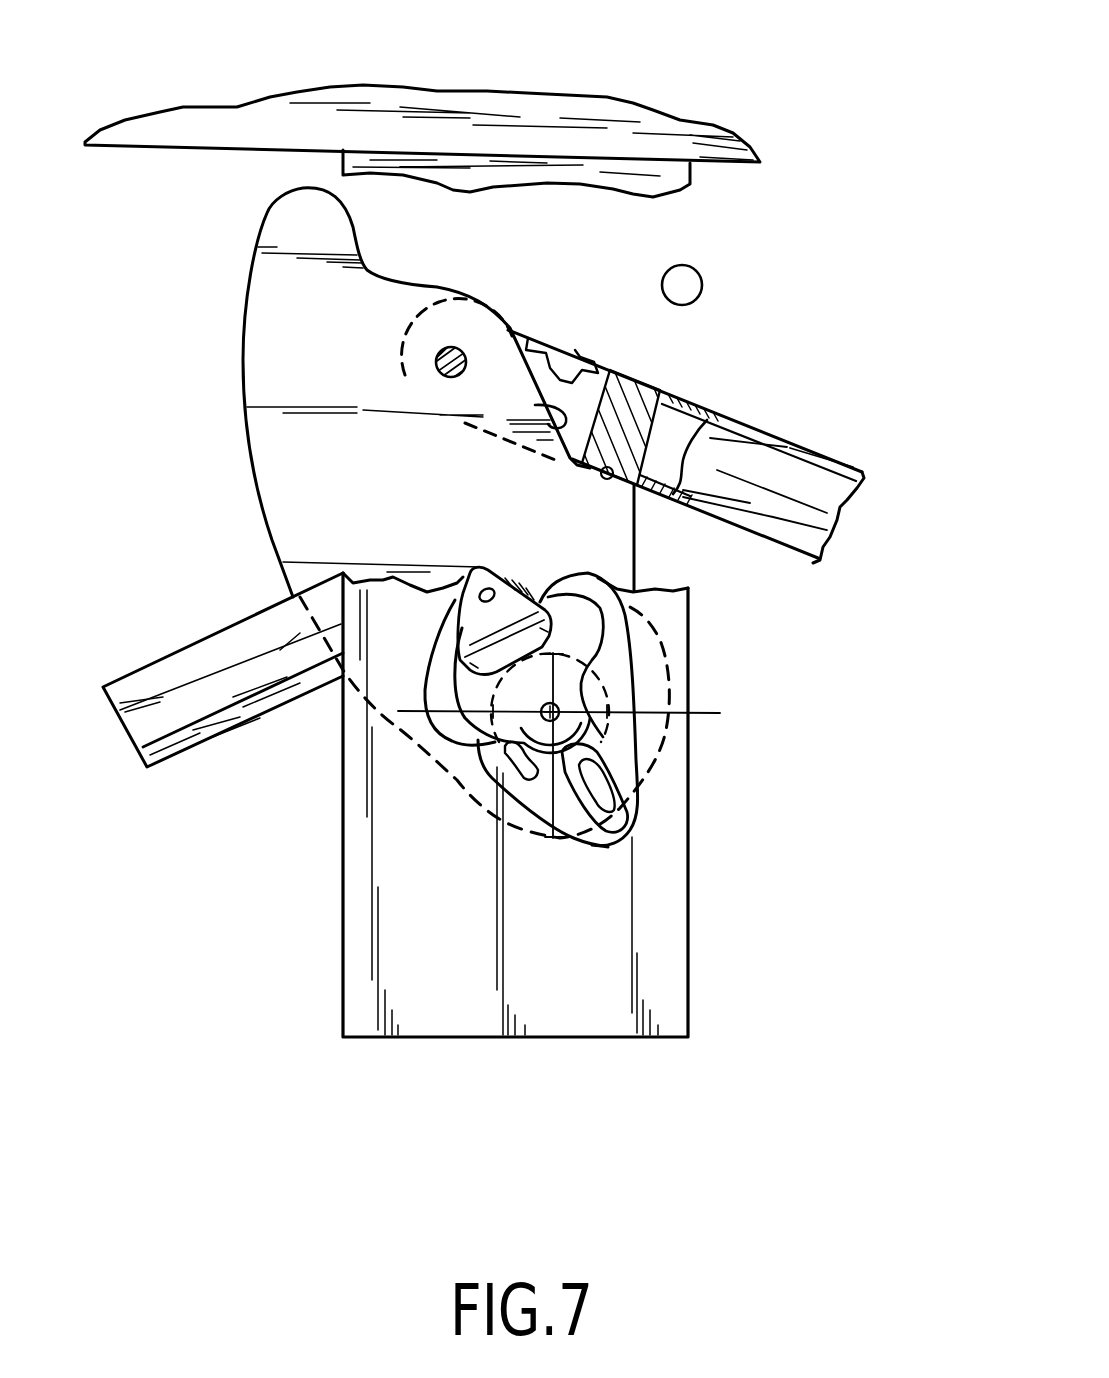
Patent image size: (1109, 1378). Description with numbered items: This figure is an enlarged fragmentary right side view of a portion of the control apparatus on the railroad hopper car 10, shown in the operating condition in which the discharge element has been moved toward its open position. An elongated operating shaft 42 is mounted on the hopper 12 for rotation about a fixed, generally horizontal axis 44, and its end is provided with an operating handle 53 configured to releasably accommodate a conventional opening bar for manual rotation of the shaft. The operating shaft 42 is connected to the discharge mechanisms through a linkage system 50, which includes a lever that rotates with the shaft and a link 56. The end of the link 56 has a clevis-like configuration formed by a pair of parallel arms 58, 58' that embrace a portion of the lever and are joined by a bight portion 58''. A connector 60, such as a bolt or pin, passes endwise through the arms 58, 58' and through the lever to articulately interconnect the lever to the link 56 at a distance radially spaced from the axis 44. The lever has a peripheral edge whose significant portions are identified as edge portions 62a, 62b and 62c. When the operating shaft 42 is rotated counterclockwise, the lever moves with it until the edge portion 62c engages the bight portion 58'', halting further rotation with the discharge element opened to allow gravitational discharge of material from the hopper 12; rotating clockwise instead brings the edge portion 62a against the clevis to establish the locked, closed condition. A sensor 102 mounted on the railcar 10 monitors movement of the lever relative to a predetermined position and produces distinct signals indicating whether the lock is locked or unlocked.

The railroad hopper car 10 is at (726, 86).
The hopper 12 is at (732, 167).
The operating shaft 42 is at (486, 822).
The axis 44 is at (556, 718).
The linkage system 50 is at (644, 851).
The operating handle 53 is at (597, 843).
The link 56 is at (800, 540).
The arm 58 is at (685, 441).
The arm 58' is at (562, 334).
The bight portion 58'' is at (748, 431).
The connector 60 is at (451, 369).
The edge portion 62a is at (353, 230).
The edge portion 62b is at (535, 405).
The edge portion 62c is at (602, 473).
The sensor 102 is at (700, 293).